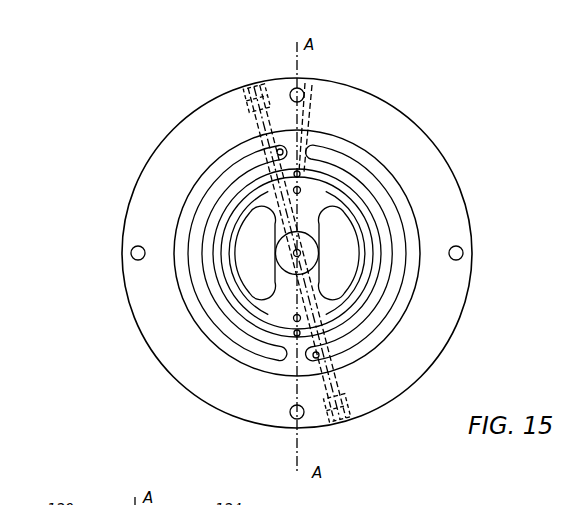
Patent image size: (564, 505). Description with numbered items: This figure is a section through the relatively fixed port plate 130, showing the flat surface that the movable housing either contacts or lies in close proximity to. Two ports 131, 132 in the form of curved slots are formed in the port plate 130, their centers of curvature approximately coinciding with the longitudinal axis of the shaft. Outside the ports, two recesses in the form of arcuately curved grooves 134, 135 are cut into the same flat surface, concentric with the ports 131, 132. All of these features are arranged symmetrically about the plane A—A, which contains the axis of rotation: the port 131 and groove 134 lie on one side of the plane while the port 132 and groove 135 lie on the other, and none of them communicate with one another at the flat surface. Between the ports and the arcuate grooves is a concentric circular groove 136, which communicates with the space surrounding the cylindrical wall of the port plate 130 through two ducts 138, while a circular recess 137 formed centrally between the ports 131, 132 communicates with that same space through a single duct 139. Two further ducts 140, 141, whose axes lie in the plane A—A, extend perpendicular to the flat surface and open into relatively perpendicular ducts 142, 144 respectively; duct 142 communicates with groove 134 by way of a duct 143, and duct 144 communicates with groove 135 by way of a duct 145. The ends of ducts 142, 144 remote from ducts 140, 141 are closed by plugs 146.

The port plate 130 is at (439, 139).
The port 131 is at (240, 271).
The port 132 is at (352, 225).
The arcuately curved groove 134 is at (222, 326).
The arcuately curved groove 135 is at (360, 172).
The circular groove 136 is at (368, 299).
The circular recess 137 is at (309, 262).
The duct 138 is at (312, 101).
The duct 139 is at (245, 122).
The duct 140 is at (300, 193).
The duct 141 is at (294, 318).
The duct 142 is at (295, 169).
The duct 143 is at (277, 152).
The duct 144 is at (300, 331).
The duct 145 is at (320, 357).
The plug 146 is at (254, 84).